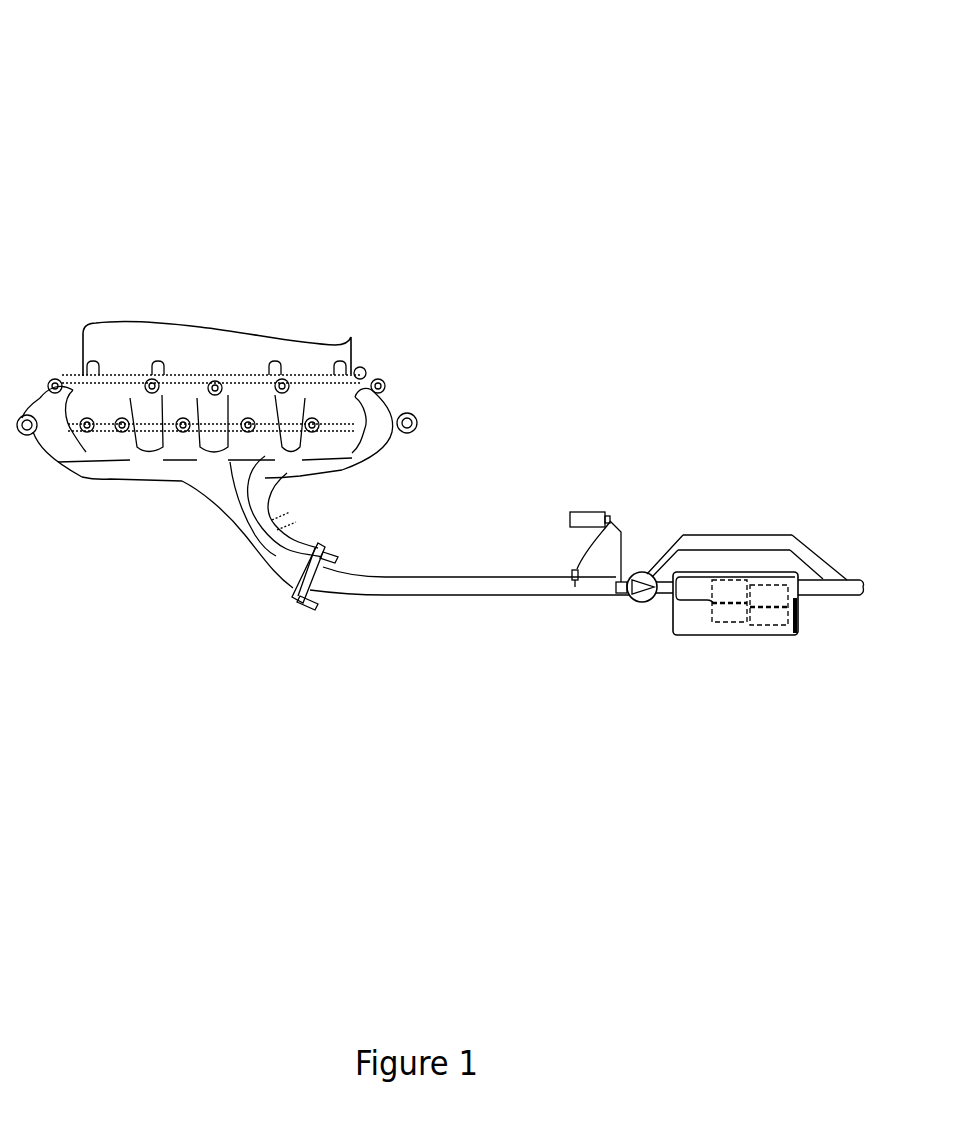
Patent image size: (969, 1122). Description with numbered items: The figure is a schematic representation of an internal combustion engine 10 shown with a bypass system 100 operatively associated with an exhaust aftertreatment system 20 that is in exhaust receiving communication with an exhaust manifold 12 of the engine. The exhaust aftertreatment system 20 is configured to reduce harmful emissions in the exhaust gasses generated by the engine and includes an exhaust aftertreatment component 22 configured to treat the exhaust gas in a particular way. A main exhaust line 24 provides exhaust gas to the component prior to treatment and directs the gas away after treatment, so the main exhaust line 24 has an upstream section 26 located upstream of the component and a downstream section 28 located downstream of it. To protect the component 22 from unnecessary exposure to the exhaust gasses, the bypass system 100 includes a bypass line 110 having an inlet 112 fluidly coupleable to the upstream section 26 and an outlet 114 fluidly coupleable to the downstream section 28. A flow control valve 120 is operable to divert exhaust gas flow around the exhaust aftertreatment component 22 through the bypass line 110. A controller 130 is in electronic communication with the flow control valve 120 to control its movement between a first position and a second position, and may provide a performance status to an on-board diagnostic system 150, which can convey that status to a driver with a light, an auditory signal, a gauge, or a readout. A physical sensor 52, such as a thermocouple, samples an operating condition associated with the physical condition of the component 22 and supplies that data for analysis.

The internal combustion engine 10 is at (172, 88).
The exhaust manifold 12 is at (153, 476).
The exhaust aftertreatment system 20 is at (668, 662).
The exhaust aftertreatment component 22 is at (747, 623).
The main exhaust line 24 is at (450, 596).
The upstream section 26 is at (607, 596).
The downstream section 28 is at (850, 598).
The physical sensor 52 is at (570, 568).
The bypass system 100 is at (770, 428).
The bypass line 110 is at (722, 538).
The inlet 112 is at (640, 570).
The outlet 114 is at (825, 558).
The flow control valve 120 is at (633, 604).
The controller 130 is at (575, 482).
The on-board diagnostic system 150 is at (601, 512).